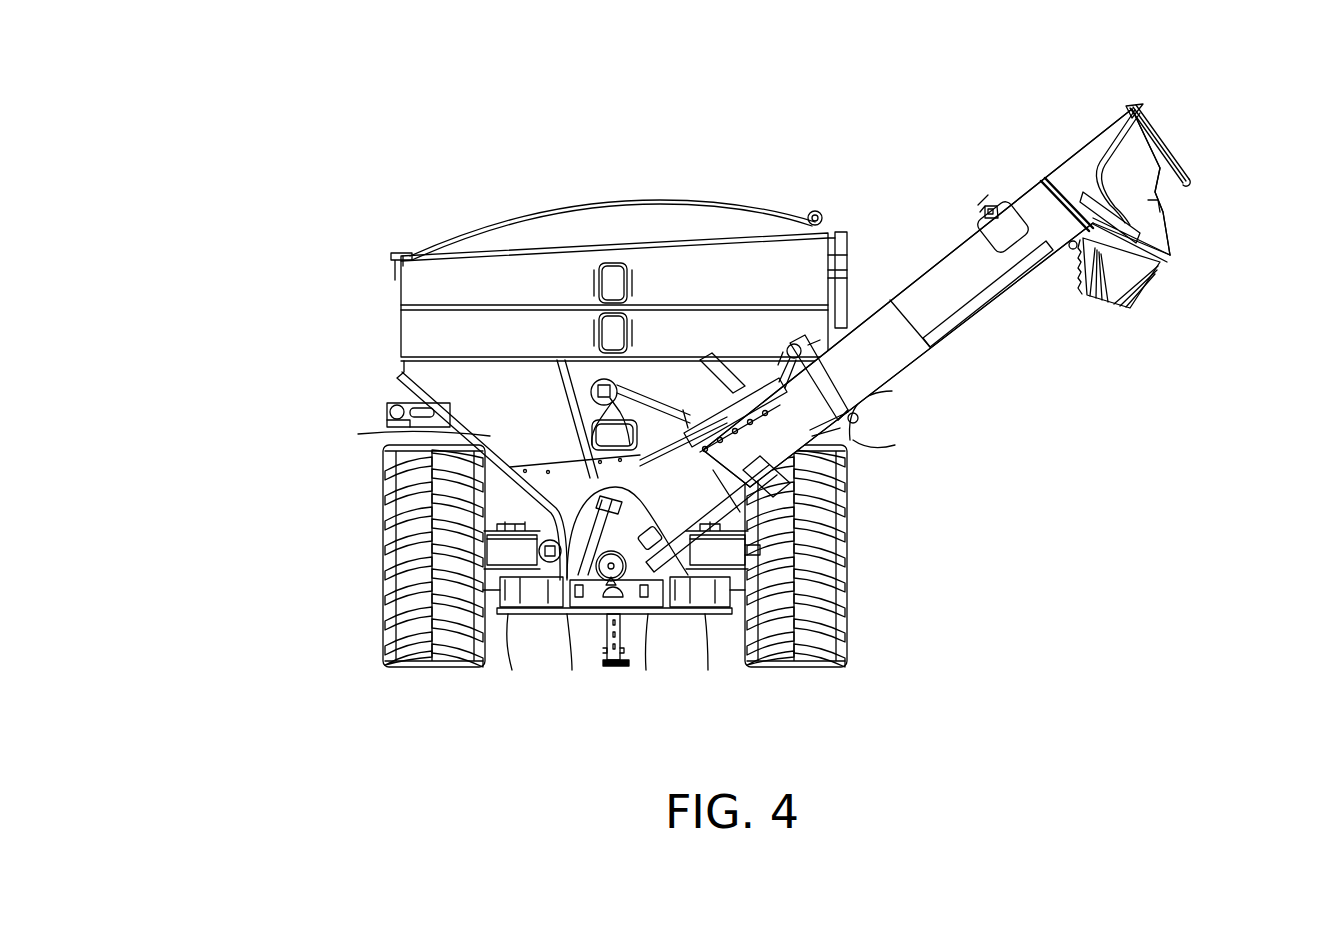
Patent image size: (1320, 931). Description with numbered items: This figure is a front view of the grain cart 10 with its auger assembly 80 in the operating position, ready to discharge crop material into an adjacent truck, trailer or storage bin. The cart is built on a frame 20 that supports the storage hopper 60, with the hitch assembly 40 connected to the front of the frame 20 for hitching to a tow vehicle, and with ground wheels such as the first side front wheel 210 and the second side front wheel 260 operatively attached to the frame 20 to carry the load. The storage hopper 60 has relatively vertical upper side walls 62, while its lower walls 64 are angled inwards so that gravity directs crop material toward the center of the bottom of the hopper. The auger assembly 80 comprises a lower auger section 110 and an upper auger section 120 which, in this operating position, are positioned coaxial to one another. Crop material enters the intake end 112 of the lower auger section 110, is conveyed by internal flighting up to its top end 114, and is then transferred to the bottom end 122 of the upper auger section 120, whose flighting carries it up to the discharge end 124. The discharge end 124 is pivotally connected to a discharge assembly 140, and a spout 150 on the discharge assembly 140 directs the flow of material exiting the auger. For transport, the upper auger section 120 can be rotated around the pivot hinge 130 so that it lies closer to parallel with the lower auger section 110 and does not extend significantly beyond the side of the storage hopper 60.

The grain cart 10 is at (736, 119).
The frame 20 is at (518, 617).
The hitch assembly 40 is at (645, 617).
The storage hopper 60 is at (400, 338).
The upper side walls 62 is at (400, 298).
The lower walls 64 is at (403, 432).
The auger assembly 80 is at (997, 180).
The lower auger section 110 is at (780, 448).
The intake end 112 is at (575, 617).
The top end 114 is at (855, 428).
The upper auger section 120 is at (1005, 262).
The bottom end 122 is at (862, 405).
The discharge end 124 is at (1052, 188).
The pivot hinge 130 is at (795, 342).
The discharge assembly 140 is at (1142, 160).
The spout 150 is at (1148, 288).
The first side front wheel 210 is at (384, 600).
The second side front wheel 260 is at (849, 600).